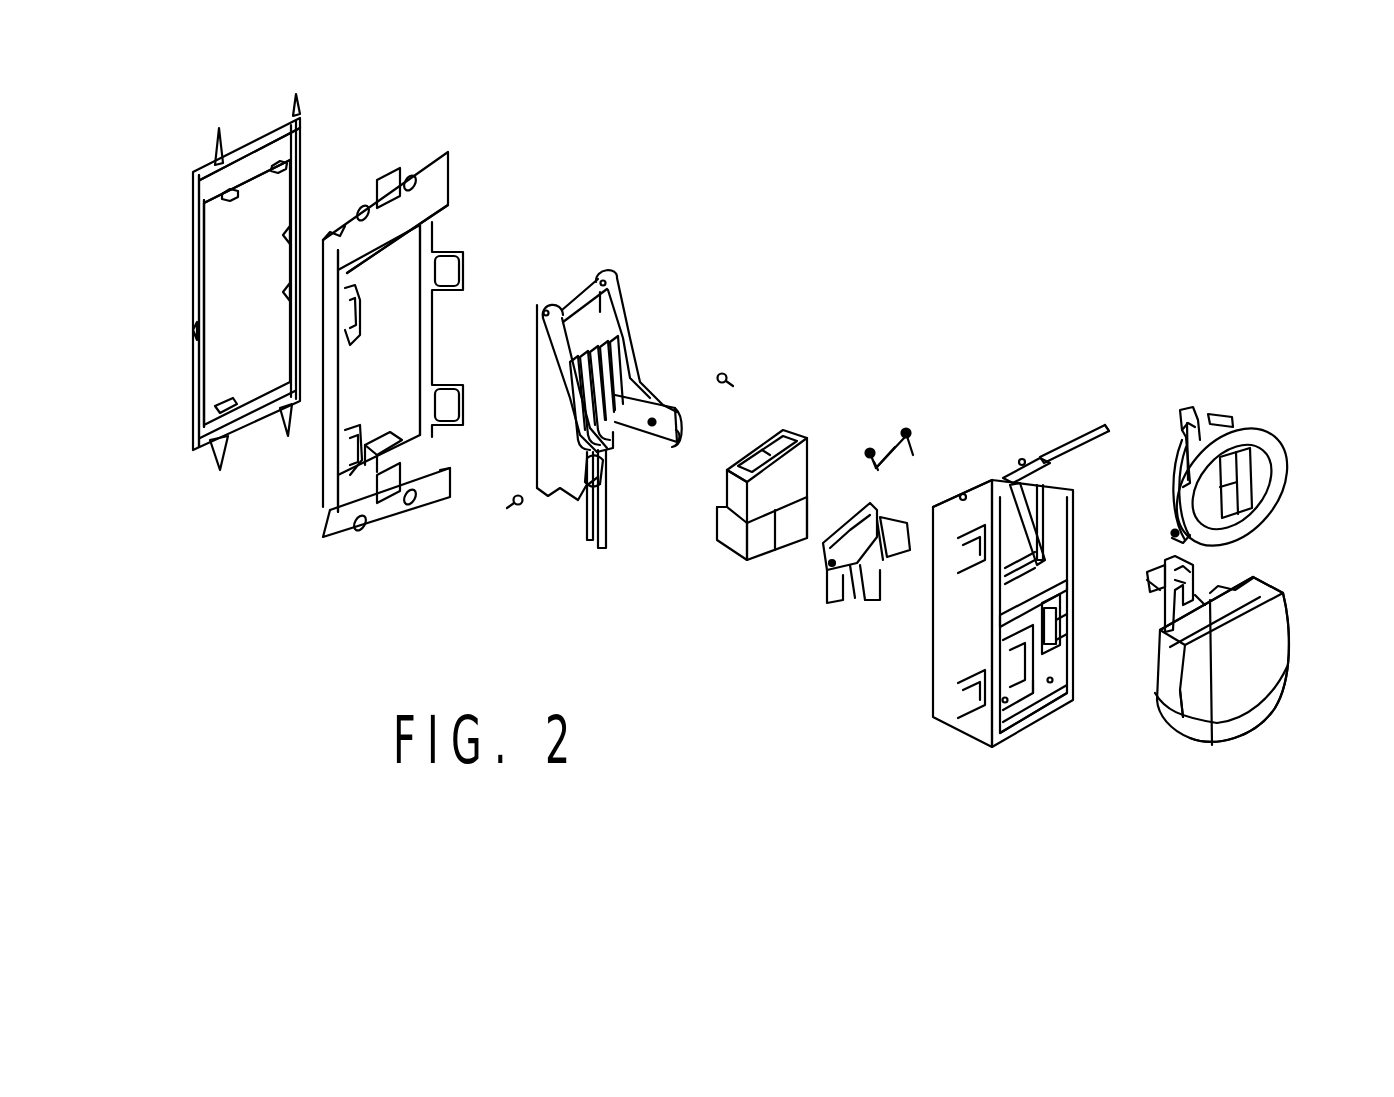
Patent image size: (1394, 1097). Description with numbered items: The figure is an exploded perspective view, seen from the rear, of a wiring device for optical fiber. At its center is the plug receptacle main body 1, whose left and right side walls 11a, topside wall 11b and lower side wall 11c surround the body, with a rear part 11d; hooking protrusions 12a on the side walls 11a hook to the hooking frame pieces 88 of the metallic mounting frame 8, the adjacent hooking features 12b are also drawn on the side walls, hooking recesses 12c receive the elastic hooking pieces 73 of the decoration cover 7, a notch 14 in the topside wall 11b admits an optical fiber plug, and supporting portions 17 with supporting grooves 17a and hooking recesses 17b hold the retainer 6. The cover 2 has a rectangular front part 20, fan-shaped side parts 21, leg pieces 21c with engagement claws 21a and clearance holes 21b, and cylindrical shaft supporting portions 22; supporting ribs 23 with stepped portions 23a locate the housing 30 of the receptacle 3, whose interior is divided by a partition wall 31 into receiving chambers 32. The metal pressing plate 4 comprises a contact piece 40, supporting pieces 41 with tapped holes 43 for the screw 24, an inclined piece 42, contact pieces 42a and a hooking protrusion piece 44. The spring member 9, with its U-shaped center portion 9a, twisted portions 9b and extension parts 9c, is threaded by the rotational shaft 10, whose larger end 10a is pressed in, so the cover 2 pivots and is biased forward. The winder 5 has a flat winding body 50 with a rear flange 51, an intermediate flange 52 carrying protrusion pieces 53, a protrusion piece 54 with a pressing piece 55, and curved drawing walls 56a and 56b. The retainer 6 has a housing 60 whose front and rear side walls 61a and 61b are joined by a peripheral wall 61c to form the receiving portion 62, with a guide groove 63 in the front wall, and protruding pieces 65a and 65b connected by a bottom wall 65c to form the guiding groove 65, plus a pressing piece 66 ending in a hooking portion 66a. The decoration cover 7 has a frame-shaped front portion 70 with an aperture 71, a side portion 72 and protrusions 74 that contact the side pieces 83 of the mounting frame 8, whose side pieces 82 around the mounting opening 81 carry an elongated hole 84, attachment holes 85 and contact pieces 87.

The plug receptacle main body 1 is at (924, 725).
The cover 2 is at (646, 311).
The receptacle for optical fiber 3 is at (718, 556).
The pressing plate 4 is at (820, 603).
The winder 5 is at (1280, 431).
The retainer 6 is at (1293, 637).
The decoration cover 7 is at (190, 462).
The mounting frame 8 is at (452, 143).
The spring member 9 is at (920, 446).
The center portion of the spring member 9a is at (887, 460).
The twisted portion 9b is at (869, 448).
The extension part 9c is at (883, 457).
The rotational shaft 10 is at (1068, 430).
The other end of the rotation shaft 10a is at (1104, 424).
The side wall 11a is at (1047, 510).
The topside wall 11b is at (990, 475).
The lower side wall 11c is at (1043, 702).
The rear part 11d is at (1037, 690).
The hooking protrusion 12a is at (973, 562).
The engaging recess 12b is at (967, 578).
The hooking recess 12c is at (961, 495).
The notch 14 is at (1017, 455).
The supporting portion 17 is at (1000, 650).
The supporting groove 17a is at (1057, 640).
The hooking recess 17b is at (1057, 645).
The front part 20 is at (593, 337).
The side part 21 is at (633, 387).
The engagement claw 21a is at (682, 422).
The clearance hole 21b is at (590, 522).
The leg piece 21c is at (604, 550).
The shaft supporting portion 22 is at (550, 303).
The supporting rib 23 is at (602, 363).
The stepped portion 23a is at (612, 455).
The screw 24 is at (733, 374).
The housing 30 is at (800, 468).
The partition wall 31 is at (763, 432).
The receiving chamber 32 is at (783, 430).
The contact piece 40 is at (850, 520).
The supporting piece 41 is at (883, 517).
The inclined piece 42 is at (866, 602).
The contact piece 42a is at (832, 600).
The tapped hole 43 is at (885, 520).
The hooking protrusion piece 44 is at (858, 602).
The winding body 50 is at (1183, 495).
The flange 51 is at (1280, 488).
The flange 52 is at (1173, 530).
The protrusion piece 53 is at (1175, 537).
The protrusion piece 54 is at (1196, 418).
The pressing piece 55 is at (1190, 408).
The drawing wall 56a is at (1186, 450).
The drawing wall 56b is at (1230, 424).
The housing 60 is at (1268, 704).
The front side wall 61a is at (1235, 600).
The rear side wall 61b is at (1268, 658).
The peripheral wall 61c is at (1173, 720).
The receiving portion 62 is at (1245, 610).
The guide groove 63 is at (1212, 745).
The guiding groove 65 is at (1195, 570).
The protruding piece 65a is at (1195, 578).
The protruding piece 65b is at (1183, 582).
The bottom wall 65c is at (1202, 600).
The pressing piece 66 is at (1165, 562).
The hooking portion 66a is at (1153, 585).
The front portion 70 is at (287, 150).
The aperture 71 is at (202, 300).
The side portion 72 is at (254, 135).
The elastic hooking piece 73 is at (276, 172).
The protrusion 74 is at (219, 150).
The mounting opening 81 is at (407, 263).
The side piece 82 is at (410, 170).
The side piece 83 is at (440, 313).
The elongated hole 84 is at (388, 192).
The attachment hole 85 is at (363, 233).
The contact piece 87 is at (378, 455).
The hooking frame piece 88 is at (357, 340).